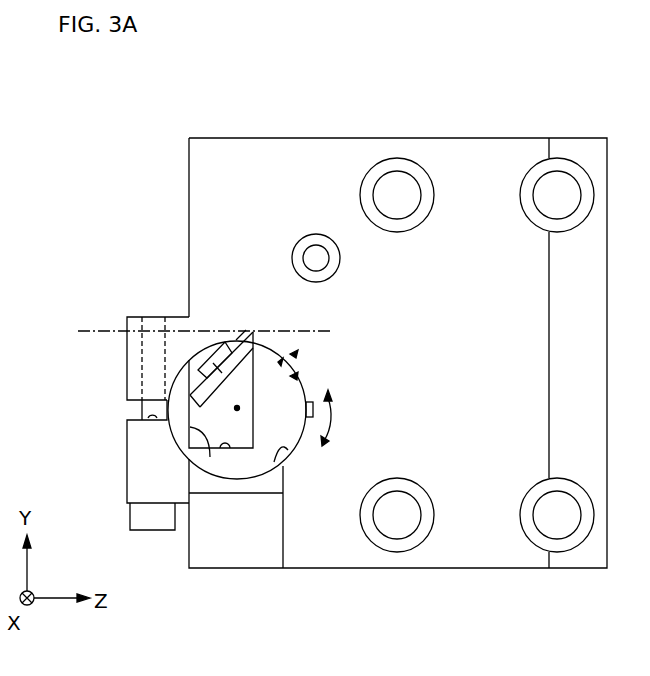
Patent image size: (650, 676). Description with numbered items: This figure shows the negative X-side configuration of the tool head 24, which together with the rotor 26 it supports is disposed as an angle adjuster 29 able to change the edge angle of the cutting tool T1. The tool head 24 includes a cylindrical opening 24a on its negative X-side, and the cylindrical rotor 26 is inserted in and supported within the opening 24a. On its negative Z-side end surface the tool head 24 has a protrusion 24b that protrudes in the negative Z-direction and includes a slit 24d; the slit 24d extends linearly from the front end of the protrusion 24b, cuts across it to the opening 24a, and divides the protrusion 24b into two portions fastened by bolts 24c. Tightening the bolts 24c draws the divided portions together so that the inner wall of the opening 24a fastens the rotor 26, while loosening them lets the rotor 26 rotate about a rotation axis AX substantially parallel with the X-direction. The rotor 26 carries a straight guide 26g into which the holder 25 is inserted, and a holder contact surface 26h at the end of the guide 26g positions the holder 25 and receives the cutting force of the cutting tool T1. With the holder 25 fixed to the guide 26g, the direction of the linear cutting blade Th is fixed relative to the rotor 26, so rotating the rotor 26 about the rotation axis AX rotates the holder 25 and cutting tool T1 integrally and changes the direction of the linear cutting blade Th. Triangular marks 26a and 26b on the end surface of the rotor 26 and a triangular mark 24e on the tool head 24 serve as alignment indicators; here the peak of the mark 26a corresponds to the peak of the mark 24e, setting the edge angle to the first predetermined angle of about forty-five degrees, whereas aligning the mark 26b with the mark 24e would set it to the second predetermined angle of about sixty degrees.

The angle adjuster 29 is at (158, 198).
The tool head 24 is at (527, 146).
The opening 24a is at (284, 496).
The protrusion 24b is at (131, 440).
The bolts 24c is at (135, 517).
The slit 24d is at (152, 418).
The mark 24e is at (296, 351).
The holder 25 is at (253, 476).
The rotor 26 is at (296, 422).
The mark 26a is at (280, 358).
The mark 26b is at (304, 381).
The guide 26g is at (217, 473).
The holder contact surface 26h is at (226, 452).
The rotation axis AX is at (238, 410).
The cutting tool T1 is at (195, 355).
The linear cutting blade Th is at (240, 337).